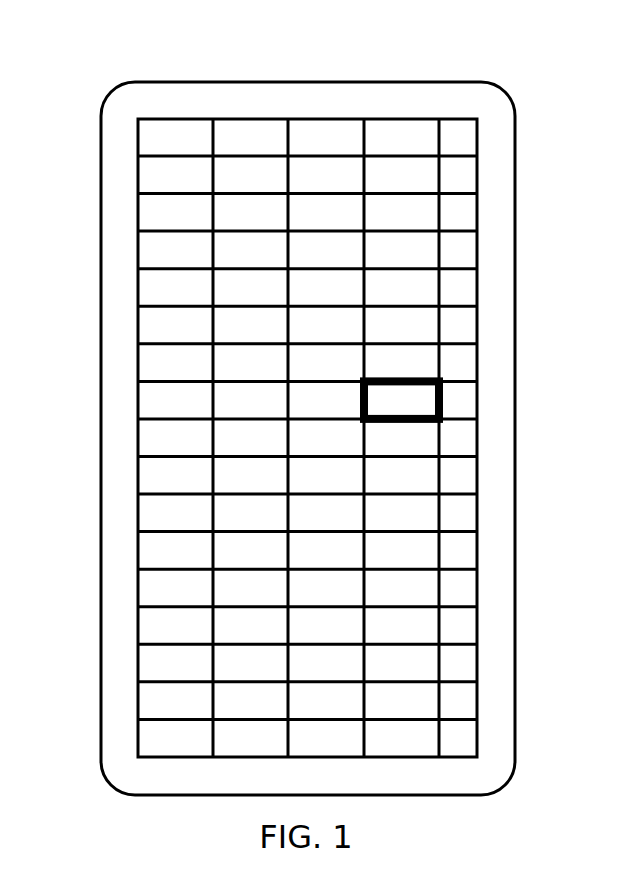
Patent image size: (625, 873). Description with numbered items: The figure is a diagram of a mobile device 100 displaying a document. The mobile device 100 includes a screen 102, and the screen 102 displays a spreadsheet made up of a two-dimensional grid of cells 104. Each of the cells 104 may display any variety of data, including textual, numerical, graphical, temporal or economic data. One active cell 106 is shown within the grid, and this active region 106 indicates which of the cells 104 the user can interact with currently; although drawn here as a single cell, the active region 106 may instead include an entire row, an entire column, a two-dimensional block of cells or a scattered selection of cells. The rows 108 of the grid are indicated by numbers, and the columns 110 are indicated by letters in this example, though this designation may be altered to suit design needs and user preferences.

The mobile device 100 is at (328, 38).
The screen 102 is at (477, 194).
The cells 104 is at (418, 251).
The active cell 106 is at (443, 398).
The rows 108 is at (138, 213).
The columns 110 is at (397, 119).